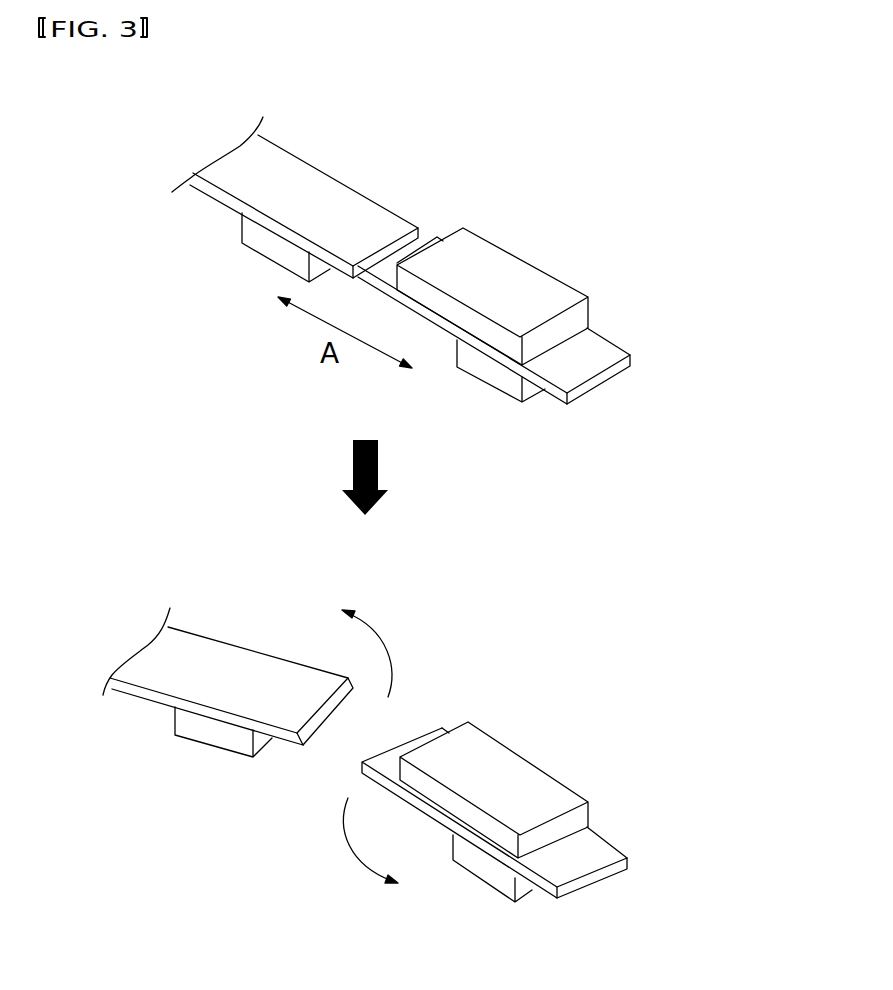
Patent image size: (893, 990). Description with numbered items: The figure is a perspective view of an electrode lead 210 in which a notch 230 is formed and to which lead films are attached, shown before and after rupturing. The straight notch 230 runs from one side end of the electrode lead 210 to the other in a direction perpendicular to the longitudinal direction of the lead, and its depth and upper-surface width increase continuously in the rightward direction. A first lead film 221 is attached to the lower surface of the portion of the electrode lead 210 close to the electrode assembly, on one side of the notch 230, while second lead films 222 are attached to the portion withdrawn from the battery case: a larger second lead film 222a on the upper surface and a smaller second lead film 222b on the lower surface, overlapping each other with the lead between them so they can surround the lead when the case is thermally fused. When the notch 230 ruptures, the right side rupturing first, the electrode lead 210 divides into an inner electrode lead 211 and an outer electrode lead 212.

The electrode lead 210 is at (654, 349).
The inner electrode lead 211 is at (135, 690).
The outer electrode lead 212 is at (600, 855).
The first lead film 221 is at (265, 243).
The second lead film 222 is at (488, 748).
The second lead film 222a is at (583, 293).
The second lead film 222b is at (523, 403).
The notch 230 is at (436, 202).